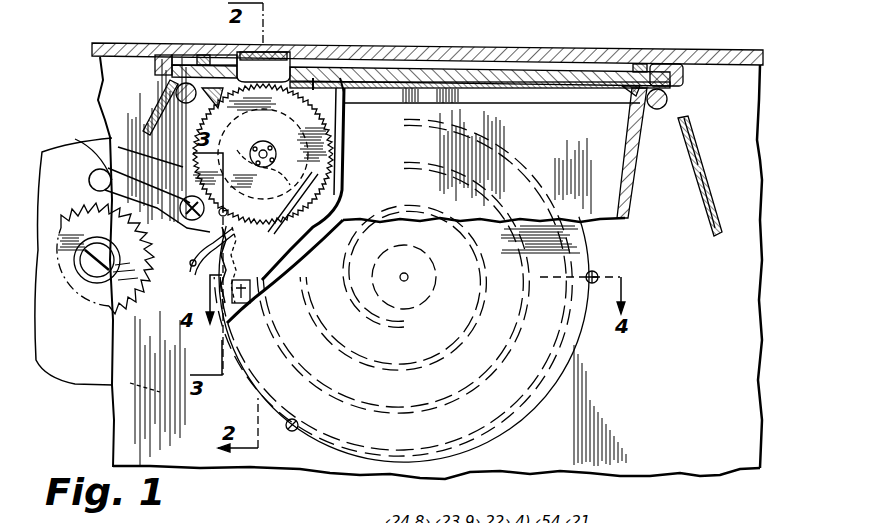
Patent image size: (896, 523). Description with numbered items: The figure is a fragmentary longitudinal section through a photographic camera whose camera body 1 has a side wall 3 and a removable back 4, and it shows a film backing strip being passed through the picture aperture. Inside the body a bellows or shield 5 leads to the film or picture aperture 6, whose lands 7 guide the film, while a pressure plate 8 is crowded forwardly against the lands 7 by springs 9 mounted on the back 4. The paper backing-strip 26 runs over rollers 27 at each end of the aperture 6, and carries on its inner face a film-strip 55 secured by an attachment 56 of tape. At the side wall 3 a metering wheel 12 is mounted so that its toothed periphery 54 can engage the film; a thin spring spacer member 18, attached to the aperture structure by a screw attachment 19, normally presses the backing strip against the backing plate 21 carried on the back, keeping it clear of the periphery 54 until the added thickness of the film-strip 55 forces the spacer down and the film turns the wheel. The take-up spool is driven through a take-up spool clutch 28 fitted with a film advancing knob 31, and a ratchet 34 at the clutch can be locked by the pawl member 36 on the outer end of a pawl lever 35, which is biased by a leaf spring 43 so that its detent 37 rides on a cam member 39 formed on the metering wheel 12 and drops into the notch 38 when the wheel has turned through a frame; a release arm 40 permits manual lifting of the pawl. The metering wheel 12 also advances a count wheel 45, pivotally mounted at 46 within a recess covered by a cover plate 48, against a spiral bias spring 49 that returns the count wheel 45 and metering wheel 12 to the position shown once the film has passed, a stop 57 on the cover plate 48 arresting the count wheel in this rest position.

The camera body 1 is at (765, 348).
The removable back 4 is at (520, 50).
The bellows or shield 5 is at (350, 200).
The film or picture aperture 6 is at (548, 98).
The lands 7 is at (521, 88).
The pressure plate 8 is at (455, 75).
The springs 9 is at (660, 62).
The metering wheel 12 is at (293, 204).
The spacer member 18 is at (313, 85).
The screw attachment 19 is at (340, 85).
The backing plate 21 is at (263, 67).
The paper backing-strip 26 is at (162, 104).
The rollers 27 is at (176, 92).
The take-up spool clutch 28 is at (95, 280).
The film advancing knob 31 is at (147, 394).
The ratchet 34 is at (140, 300).
The pawl lever 35 is at (181, 199).
The pawl member 36 is at (92, 187).
The detent 37 is at (280, 190).
The notch 38 is at (243, 122).
The cam member 39 is at (298, 142).
The release arm 40 is at (205, 228).
The leaf spring 43 is at (203, 264).
The count wheel 45 is at (238, 265).
The pivot of count wheel 46 is at (410, 275).
The cover plate 48 is at (552, 405).
The bias spring 49 is at (405, 408).
The toothed periphery 54 is at (272, 60).
The film-strip 55 is at (708, 218).
The attachment 56 is at (690, 190).
The stop 57 is at (260, 318).
The side wall 3 is at (591, 370).